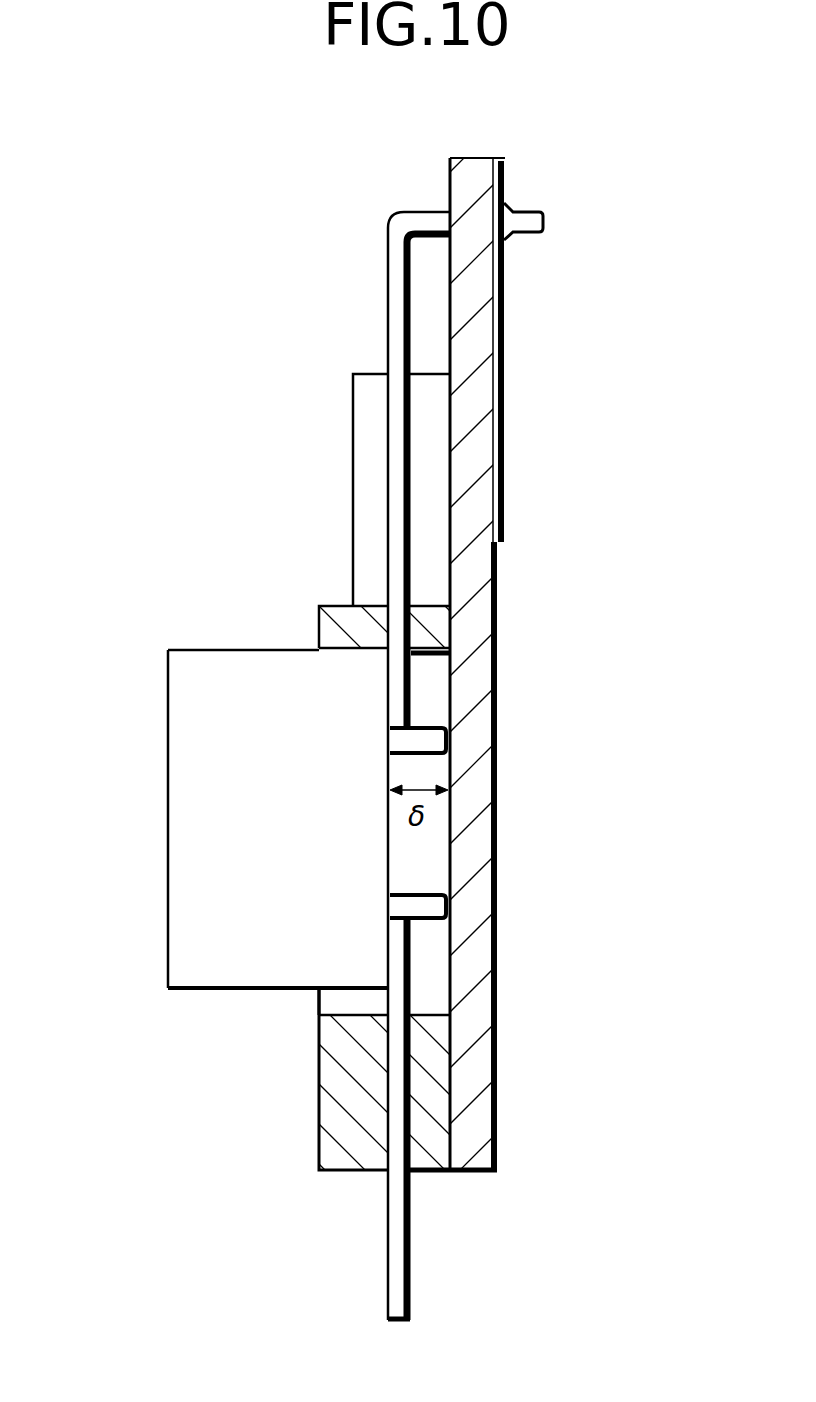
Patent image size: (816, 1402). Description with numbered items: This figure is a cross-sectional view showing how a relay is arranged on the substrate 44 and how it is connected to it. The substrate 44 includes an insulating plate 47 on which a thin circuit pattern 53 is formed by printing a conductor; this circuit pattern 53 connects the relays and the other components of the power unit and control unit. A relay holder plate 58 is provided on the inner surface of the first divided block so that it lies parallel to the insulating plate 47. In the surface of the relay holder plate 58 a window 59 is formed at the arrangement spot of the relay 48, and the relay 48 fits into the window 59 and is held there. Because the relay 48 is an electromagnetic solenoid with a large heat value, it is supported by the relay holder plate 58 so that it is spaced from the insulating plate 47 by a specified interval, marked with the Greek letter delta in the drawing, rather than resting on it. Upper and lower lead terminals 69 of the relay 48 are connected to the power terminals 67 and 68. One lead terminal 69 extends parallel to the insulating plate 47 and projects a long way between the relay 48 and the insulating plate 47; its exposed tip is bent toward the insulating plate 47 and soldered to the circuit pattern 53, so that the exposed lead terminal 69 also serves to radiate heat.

The substrate 44 is at (546, 651).
The insulating plate 47 is at (472, 672).
The relay 48 is at (168, 845).
The circuit pattern 53 is at (507, 485).
The relay holder plate 58 is at (342, 1107).
The window 59 is at (347, 1010).
The power terminal 67 is at (422, 898).
The power terminal 68 is at (417, 757).
The lead terminal 69 is at (459, 766).